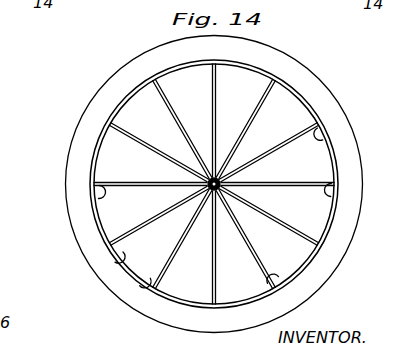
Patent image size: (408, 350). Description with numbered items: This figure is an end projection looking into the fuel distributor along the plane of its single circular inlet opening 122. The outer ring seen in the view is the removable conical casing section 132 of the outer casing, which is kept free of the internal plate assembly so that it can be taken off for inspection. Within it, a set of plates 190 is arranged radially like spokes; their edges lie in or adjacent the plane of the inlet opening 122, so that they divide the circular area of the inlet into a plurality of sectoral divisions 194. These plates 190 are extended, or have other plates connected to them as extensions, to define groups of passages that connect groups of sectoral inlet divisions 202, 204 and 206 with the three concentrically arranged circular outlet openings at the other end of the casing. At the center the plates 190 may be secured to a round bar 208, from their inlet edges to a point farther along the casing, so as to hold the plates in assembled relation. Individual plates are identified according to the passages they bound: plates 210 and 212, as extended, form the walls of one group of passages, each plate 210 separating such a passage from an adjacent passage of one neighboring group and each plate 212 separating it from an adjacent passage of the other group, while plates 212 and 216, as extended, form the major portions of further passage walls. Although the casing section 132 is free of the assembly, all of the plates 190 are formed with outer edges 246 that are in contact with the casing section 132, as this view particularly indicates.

The conical casing section 132 is at (293, 77).
The sectoral divisions 194 is at (296, 113).
The sectoral inlet divisions 202 is at (156, 131).
The sectoral inlet divisions 204 is at (193, 104).
The sectoral inlet divisions 206 is at (244, 107).
The round bar 208 is at (222, 184).
The plates 210 is at (317, 93).
The plates 212 is at (113, 233).
The plates 216 is at (96, 196).
The plates 190 is at (148, 90).
The circular inlet opening 122 is at (121, 259).
The outer edges 246 is at (137, 283).